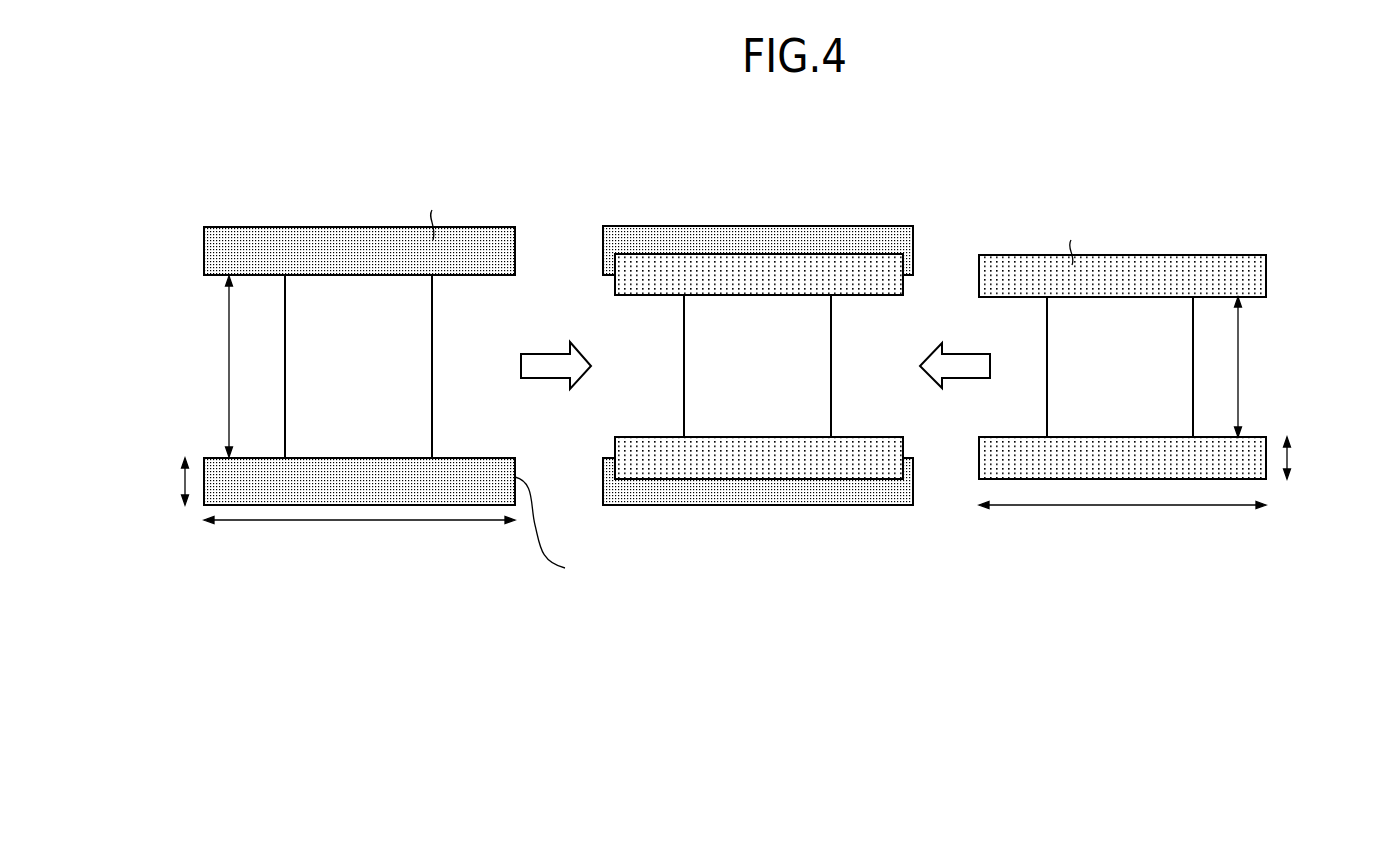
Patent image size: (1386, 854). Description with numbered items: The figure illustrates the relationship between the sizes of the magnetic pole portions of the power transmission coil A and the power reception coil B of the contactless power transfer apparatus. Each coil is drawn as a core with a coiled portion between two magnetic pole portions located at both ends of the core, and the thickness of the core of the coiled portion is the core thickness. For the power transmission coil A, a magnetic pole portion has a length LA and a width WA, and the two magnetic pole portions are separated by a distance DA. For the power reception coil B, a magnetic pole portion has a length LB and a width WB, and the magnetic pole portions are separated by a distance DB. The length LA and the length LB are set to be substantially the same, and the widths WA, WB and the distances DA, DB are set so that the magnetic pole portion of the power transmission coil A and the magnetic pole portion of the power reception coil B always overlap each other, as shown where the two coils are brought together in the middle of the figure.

The power transmission coil A is at (525, 363).
The power reception coil B is at (1098, 314).
The distance between magnetic pole portions of the power transmission coil DA is at (169, 366).
The distance between magnetic pole portions of the power reception coil DB is at (1298, 367).
The length of magnetic pole portion of the power transmission coil LA is at (359, 545).
The length of magnetic pole portion of the power reception coil LB is at (1122, 531).
The width of magnetic pole portion of the power transmission coil WA is at (182, 478).
The width of magnetic pole portion of the power reception coil WB is at (1292, 467).